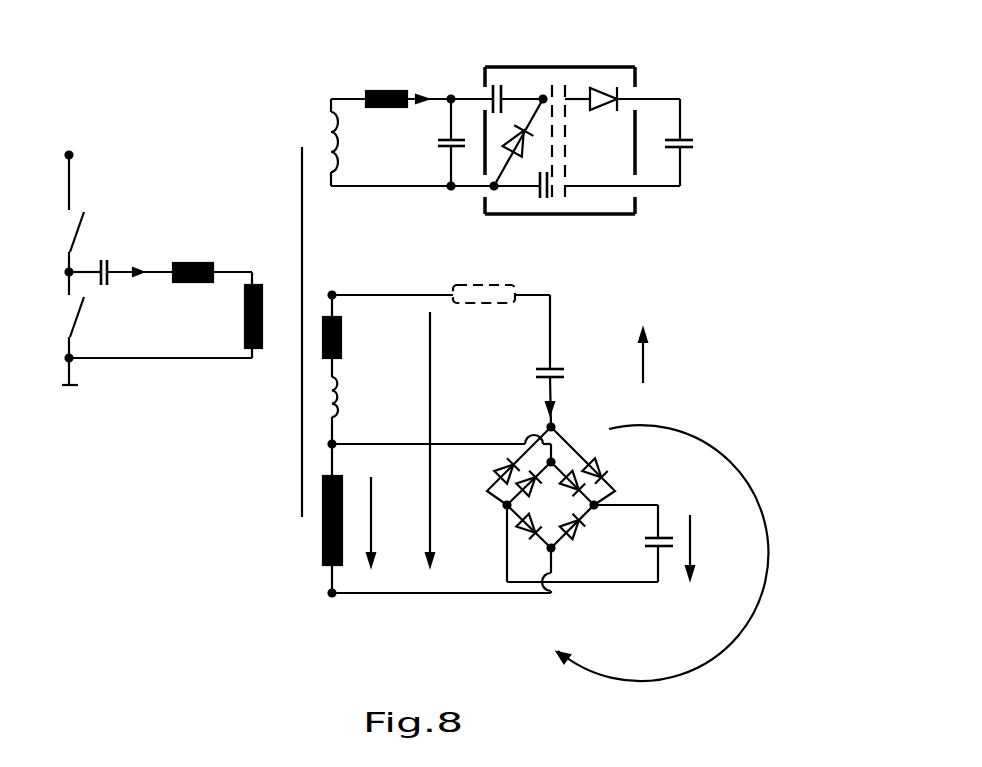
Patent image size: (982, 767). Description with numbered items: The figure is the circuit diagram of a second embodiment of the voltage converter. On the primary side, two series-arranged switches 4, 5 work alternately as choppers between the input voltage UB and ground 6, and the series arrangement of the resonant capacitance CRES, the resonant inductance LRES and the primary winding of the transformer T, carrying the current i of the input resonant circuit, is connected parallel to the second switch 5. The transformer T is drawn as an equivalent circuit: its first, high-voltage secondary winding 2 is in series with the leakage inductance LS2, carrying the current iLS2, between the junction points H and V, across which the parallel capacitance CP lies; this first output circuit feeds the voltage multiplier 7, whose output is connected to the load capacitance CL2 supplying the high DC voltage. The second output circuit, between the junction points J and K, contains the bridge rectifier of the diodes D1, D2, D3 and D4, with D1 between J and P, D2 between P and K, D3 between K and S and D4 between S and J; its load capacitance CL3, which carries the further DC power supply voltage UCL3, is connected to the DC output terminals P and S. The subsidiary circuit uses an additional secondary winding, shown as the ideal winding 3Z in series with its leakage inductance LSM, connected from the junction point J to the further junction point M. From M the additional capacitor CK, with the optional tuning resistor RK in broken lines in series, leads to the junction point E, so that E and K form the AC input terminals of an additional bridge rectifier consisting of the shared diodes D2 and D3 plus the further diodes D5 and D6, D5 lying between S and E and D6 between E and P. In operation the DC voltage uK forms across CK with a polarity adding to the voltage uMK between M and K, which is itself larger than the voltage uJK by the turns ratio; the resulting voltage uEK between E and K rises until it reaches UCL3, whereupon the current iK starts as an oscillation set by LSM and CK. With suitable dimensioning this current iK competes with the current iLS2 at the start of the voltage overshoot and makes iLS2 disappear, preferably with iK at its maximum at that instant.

The input voltage UB is at (66, 159).
The switch 4 is at (72, 228).
The switch 5 is at (72, 318).
The ground 6 is at (63, 387).
The resonant capacitance CRES is at (110, 258).
The current in the input resonant circuit i is at (138, 287).
The resonant inductance LRES is at (190, 263).
The transformer T is at (302, 302).
The first secondary winding 2 is at (339, 147).
The leakage inductance at the secondary side LS2 is at (408, 80).
The current through the leakage inductance LS2 iLS2 is at (425, 96).
The junction point H is at (455, 83).
The parallel capacitance CP is at (442, 142).
The junction point V is at (454, 204).
The voltage multiplier 7 is at (570, 63).
The load capacitance CL2 is at (706, 142).
The further junction point M is at (388, 274).
The tuning resistor RK is at (483, 285).
The additional capacitor CK is at (563, 371).
The current through the additional capacitor iK is at (538, 409).
The DC voltage at the additional capacitor uK is at (657, 356).
The leakage inductance of the additional secondary winding LSM is at (341, 339).
The ideal additional secondary winding 3Z is at (343, 397).
The junction point J is at (341, 518).
The junction point K is at (439, 590).
The voltage between junction points J and K uJK is at (390, 521).
The voltage between junction points M and K uMK is at (451, 439).
The junction point E is at (566, 417).
The diode D1 is at (570, 490).
The diode D2 is at (591, 533).
The diode D3 is at (530, 530).
The diode D4 is at (491, 488).
The further diode D5 is at (502, 463).
The further diode D6 is at (597, 464).
The junction point S is at (571, 541).
The junction point P is at (625, 519).
The load capacitance CL3 is at (670, 535).
The further DC power supply voltage UCL3 is at (719, 547).
The voltage between junction points E and K uEK is at (662, 553).